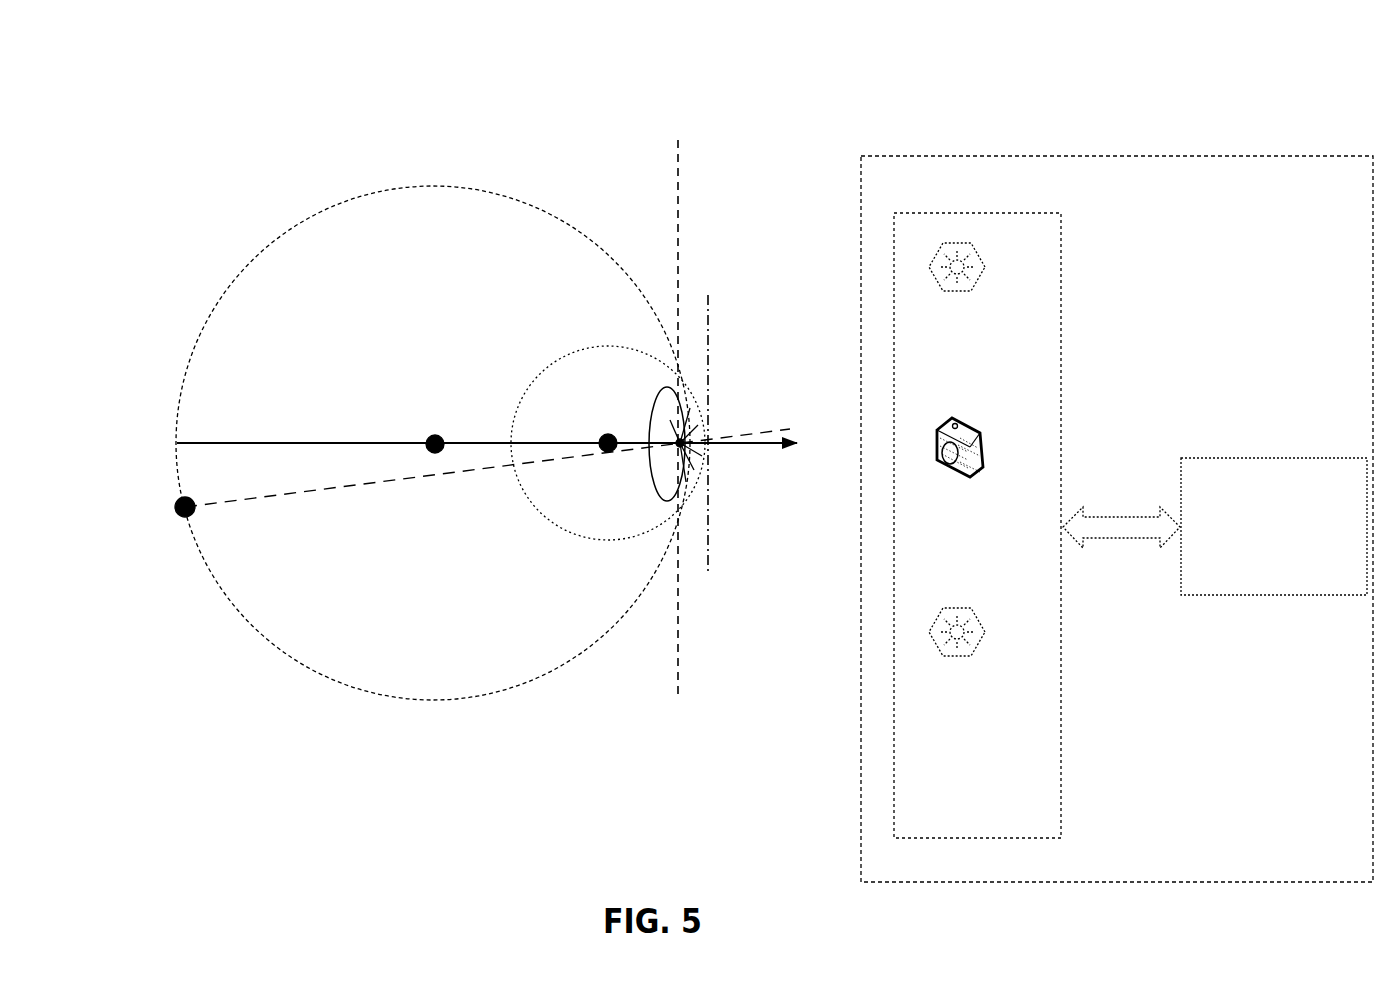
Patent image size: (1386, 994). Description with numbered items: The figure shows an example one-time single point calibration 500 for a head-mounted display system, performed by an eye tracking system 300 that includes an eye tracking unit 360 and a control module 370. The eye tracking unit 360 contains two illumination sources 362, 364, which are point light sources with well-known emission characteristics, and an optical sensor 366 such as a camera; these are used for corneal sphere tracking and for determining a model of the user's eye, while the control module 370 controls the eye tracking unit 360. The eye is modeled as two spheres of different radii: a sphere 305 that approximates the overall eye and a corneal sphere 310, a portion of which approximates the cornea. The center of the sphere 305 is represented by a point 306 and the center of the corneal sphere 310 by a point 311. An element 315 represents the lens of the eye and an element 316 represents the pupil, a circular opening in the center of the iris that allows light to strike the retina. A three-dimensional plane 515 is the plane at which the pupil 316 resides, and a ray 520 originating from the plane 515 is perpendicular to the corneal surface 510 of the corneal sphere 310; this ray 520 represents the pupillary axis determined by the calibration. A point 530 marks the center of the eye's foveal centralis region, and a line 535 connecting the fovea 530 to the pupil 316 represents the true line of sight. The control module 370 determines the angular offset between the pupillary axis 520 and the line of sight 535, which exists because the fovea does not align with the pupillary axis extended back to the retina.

The one-time single point calibration 500 is at (147, 39).
The sphere 305 is at (197, 348).
The corneal sphere 310 is at (577, 350).
The point 306 is at (457, 431).
The point 311 is at (632, 431).
The lens 315 is at (657, 463).
The pupil 316 is at (682, 453).
The ray 520 is at (843, 456).
The point 530 is at (168, 522).
The line 535 is at (487, 468).
The 3D plane 515 is at (702, 721).
The corneal surface 510 is at (712, 373).
The eye tracking system 300 is at (1349, 204).
The eye tracking unit 360 is at (998, 817).
The illumination source 362 is at (978, 322).
The illumination source 364 is at (982, 687).
The optical sensor 366 is at (988, 512).
The control module 370 is at (1293, 554).